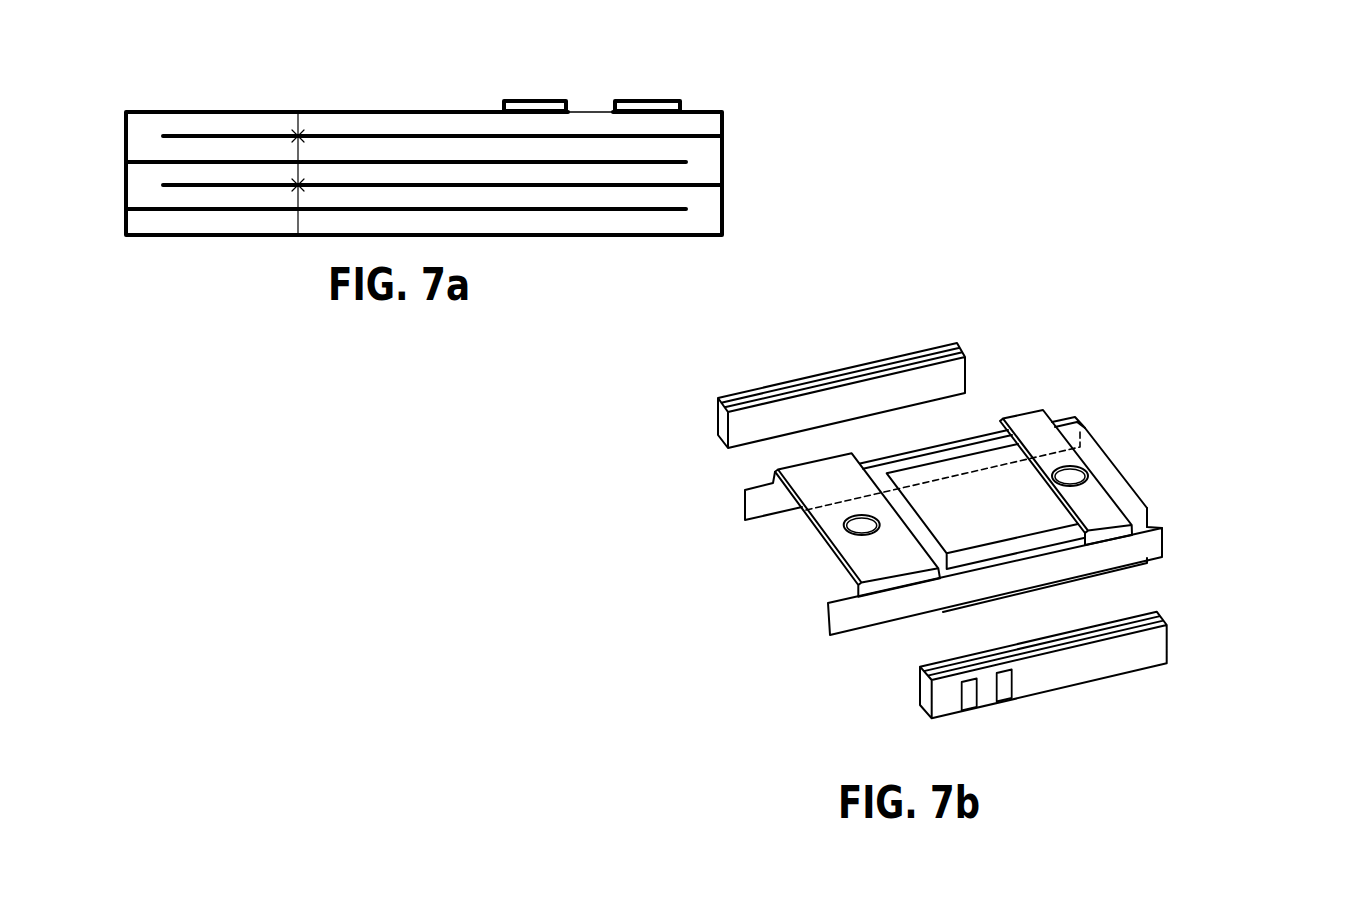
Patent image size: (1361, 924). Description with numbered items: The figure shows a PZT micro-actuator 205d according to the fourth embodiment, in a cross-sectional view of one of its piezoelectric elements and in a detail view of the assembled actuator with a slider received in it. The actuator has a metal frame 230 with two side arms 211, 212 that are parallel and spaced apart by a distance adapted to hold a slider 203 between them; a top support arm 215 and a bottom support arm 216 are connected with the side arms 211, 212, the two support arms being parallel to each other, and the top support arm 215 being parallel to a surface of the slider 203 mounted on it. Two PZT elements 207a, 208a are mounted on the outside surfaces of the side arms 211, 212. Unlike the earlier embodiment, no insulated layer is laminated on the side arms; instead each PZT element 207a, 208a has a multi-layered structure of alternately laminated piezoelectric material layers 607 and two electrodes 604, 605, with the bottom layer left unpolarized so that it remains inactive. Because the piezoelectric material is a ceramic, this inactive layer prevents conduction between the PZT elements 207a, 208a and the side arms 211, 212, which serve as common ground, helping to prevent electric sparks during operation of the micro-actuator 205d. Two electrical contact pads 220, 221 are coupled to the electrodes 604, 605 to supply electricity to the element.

In FIG. 7a, the electrode 604 is at (143, 207).
In FIG. 7a, the electrode 605 is at (490, 183).
In FIG. 7a, the piezoelectric material layers 607 is at (350, 173).
In FIG. 7a, the electrical contact pad 220 is at (652, 105).
In FIG. 7b, the electrical contact pad 220 is at (968, 703).
In FIG. 7a, the electrical contact pad 221 is at (535, 105).
In FIG. 7b, the electrical contact pad 221 is at (1000, 695).
In FIG. 7a, the PZT element 207a is at (482, 123).
In FIG. 7b, the PZT element 207a is at (757, 395).
In FIG. 7a, the PZT element 208a is at (403, 123).
In FIG. 7b, the PZT element 208a is at (1122, 688).
In FIG. 7b, the slider 203 is at (1113, 480).
In FIG. 7b, the PZT micro-actuator 205d is at (943, 513).
In FIG. 7b, the side arm 211 is at (753, 492).
In FIG. 7b, the side arm 212 is at (1153, 526).
In FIG. 7b, the top support arm 215 is at (1042, 438).
In FIG. 7b, the bottom support arm 216 is at (832, 519).
In FIG. 7b, the metal frame 230 is at (982, 433).